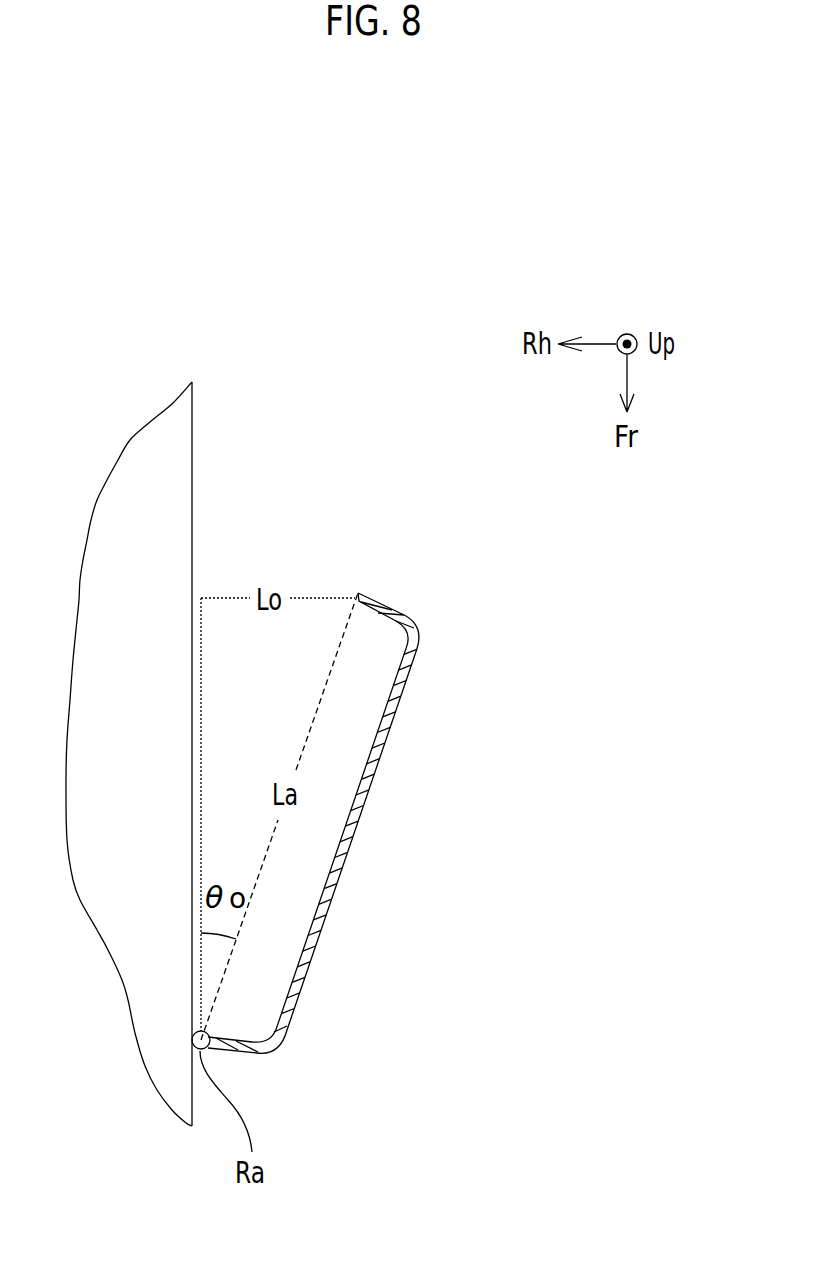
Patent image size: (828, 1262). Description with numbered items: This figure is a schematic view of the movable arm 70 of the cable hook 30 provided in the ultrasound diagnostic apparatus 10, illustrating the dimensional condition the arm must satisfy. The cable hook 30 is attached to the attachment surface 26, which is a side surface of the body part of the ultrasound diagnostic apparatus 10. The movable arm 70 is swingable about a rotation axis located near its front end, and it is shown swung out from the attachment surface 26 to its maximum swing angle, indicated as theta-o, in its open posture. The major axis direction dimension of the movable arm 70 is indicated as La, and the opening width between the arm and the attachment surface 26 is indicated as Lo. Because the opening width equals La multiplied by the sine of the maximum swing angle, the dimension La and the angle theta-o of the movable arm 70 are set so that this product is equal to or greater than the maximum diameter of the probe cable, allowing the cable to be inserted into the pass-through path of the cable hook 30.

The attachment surface 26 is at (192, 487).
The ultrasound diagnostic apparatus 10 is at (199, 754).
The cable hook 30 is at (371, 823).
The movable arm 70 is at (343, 862).